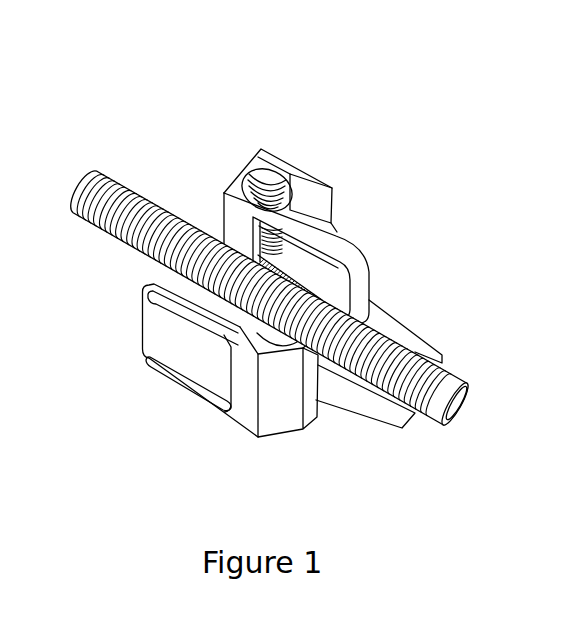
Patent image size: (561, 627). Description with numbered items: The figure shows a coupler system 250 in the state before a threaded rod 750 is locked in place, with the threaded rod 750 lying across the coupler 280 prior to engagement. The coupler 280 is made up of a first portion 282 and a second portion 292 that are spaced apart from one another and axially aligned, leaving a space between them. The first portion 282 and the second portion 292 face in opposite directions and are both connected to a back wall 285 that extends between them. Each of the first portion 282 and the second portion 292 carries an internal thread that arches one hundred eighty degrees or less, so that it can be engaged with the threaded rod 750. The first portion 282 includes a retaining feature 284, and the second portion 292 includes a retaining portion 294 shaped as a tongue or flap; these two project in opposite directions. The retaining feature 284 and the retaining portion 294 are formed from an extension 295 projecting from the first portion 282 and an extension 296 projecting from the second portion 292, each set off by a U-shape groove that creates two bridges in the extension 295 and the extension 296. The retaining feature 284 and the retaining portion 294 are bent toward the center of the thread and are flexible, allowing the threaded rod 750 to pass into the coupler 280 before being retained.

The coupler system 250 is at (113, 97).
The coupler 280 is at (360, 193).
The first portion 282 is at (238, 165).
The retaining feature 284 is at (333, 278).
The back wall 285 is at (300, 168).
The extension 295 is at (245, 250).
The second portion 292 is at (283, 402).
The retaining portion 294 is at (177, 343).
The extension 296 is at (238, 387).
The threaded rod 750 is at (465, 382).